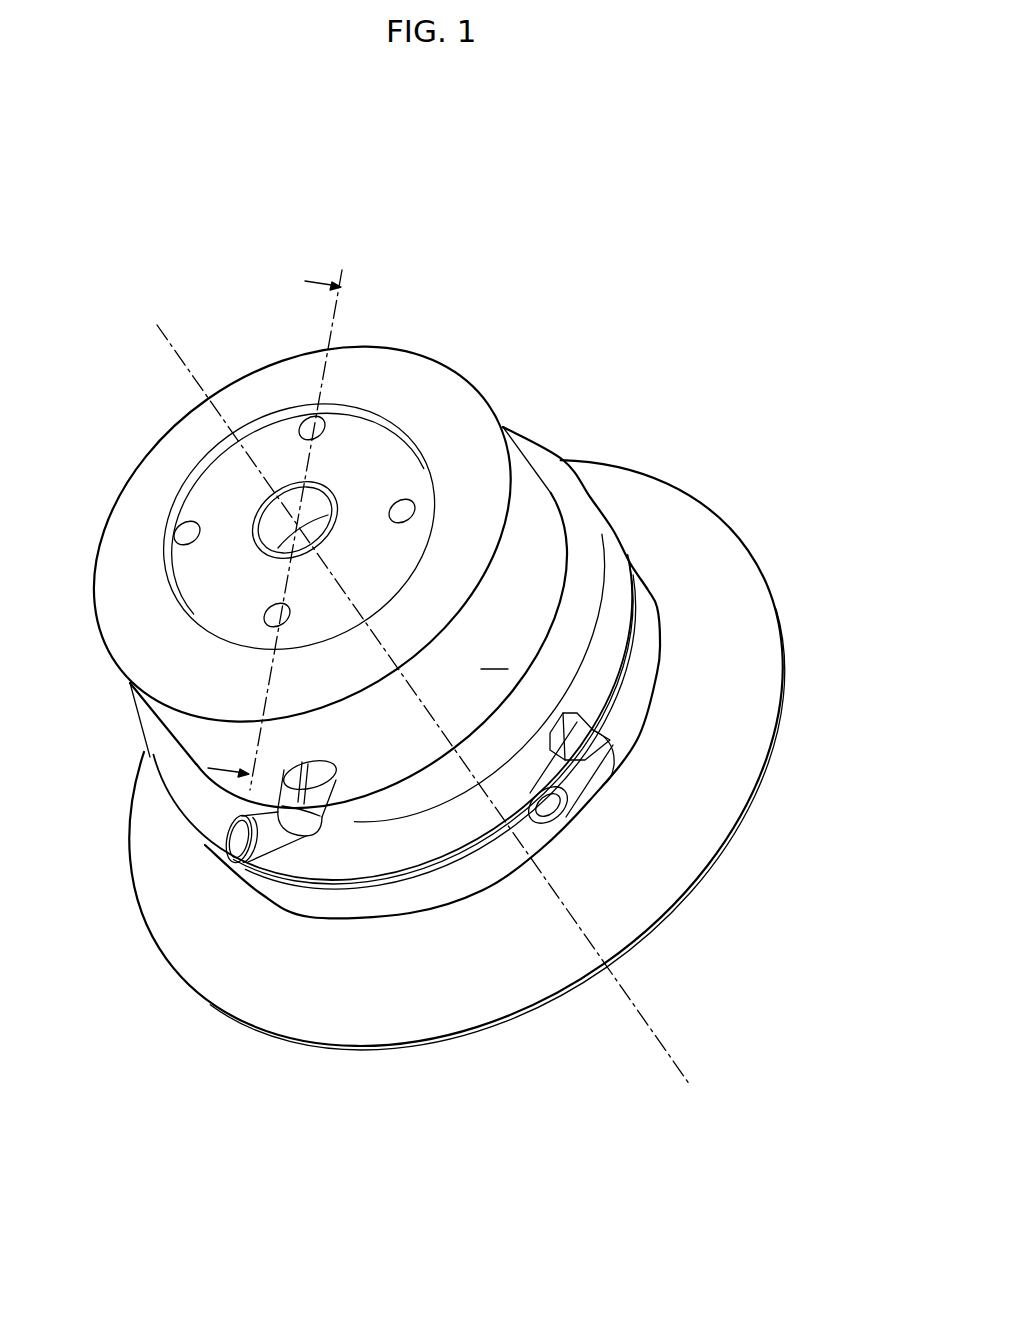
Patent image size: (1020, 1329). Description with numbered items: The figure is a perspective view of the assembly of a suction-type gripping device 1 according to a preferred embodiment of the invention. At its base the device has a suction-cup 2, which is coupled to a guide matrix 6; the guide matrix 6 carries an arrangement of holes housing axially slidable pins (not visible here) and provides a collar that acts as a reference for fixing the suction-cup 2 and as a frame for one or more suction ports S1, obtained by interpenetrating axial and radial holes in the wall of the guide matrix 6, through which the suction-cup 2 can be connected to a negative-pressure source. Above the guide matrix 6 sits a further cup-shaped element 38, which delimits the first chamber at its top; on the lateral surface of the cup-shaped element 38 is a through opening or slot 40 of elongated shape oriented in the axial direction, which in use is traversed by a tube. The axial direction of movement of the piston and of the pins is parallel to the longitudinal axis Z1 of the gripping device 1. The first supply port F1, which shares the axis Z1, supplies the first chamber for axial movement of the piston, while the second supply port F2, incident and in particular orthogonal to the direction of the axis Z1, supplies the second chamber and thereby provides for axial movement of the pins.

The suction-type gripping device 1 is at (685, 332).
The suction-cup 2 is at (437, 1015).
The guide matrix 6 is at (357, 853).
The cup-shaped element 38 is at (302, 538).
The through opening (slot) 40 is at (338, 800).
The first supply port F1 is at (313, 510).
The second supply port F2 is at (220, 837).
The suction port S1 is at (622, 749).
The longitudinal axis Z1 is at (625, 992).